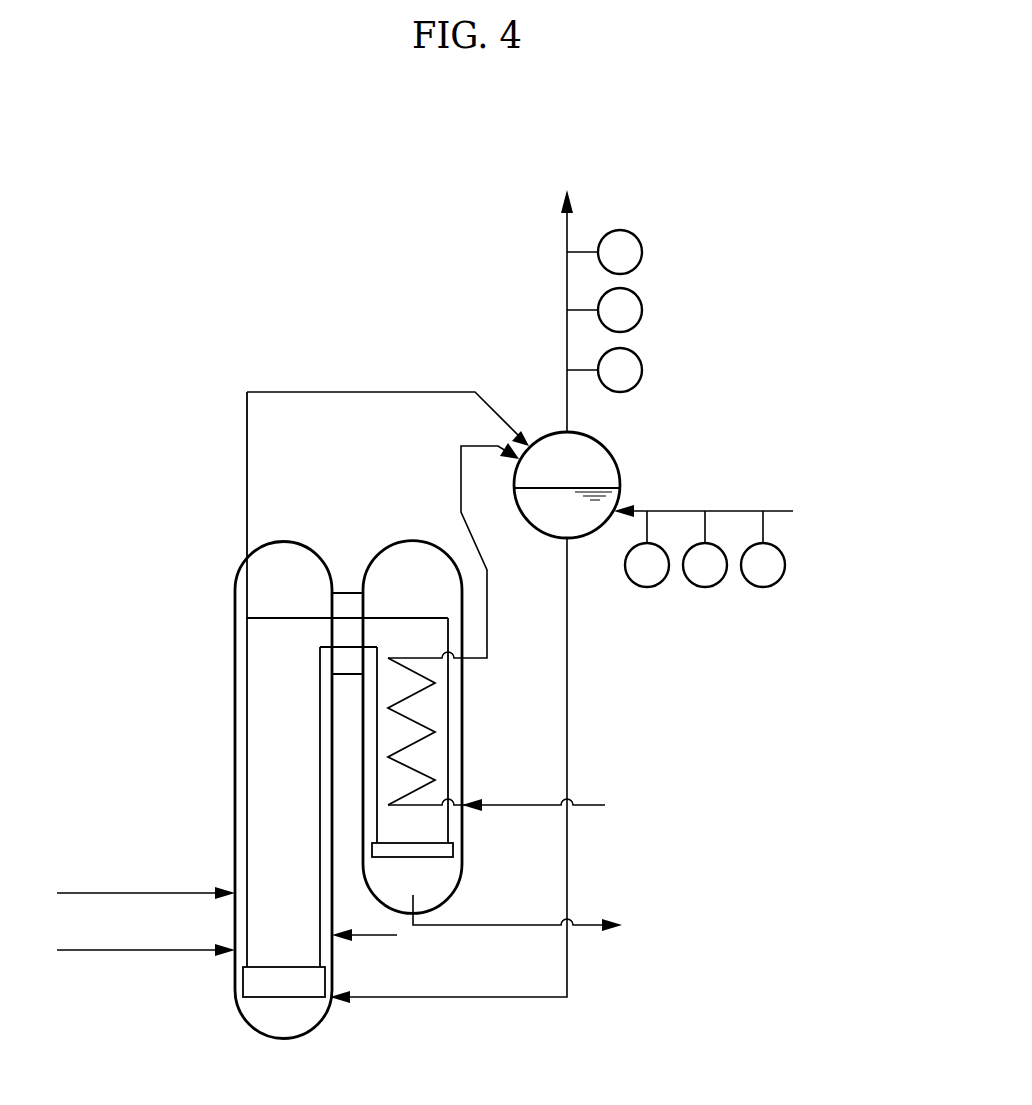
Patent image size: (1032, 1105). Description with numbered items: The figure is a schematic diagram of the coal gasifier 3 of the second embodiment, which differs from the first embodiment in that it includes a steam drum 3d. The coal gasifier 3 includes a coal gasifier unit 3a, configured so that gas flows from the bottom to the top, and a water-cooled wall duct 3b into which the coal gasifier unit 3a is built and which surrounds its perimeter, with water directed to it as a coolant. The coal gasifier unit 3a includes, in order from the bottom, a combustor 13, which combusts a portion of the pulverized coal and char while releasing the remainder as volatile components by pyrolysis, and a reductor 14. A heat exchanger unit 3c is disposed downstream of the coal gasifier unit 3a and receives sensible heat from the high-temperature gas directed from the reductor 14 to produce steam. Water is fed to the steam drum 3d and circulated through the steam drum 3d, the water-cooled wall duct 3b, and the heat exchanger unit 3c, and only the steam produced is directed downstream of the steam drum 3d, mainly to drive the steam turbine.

The coal gasifier 3 is at (731, 284).
The coal gasifier unit 3a is at (235, 651).
The water-cooled wall duct 3b is at (247, 703).
The heat exchanger unit 3c is at (422, 722).
The steam drum 3d is at (617, 449).
The combustor 13 is at (262, 790).
The reductor 14 is at (283, 635).